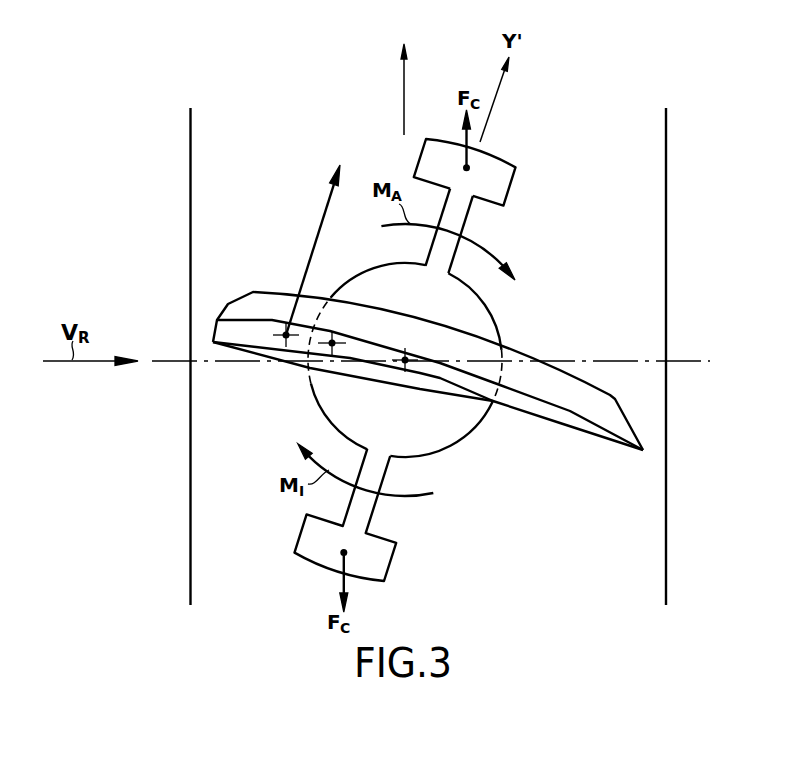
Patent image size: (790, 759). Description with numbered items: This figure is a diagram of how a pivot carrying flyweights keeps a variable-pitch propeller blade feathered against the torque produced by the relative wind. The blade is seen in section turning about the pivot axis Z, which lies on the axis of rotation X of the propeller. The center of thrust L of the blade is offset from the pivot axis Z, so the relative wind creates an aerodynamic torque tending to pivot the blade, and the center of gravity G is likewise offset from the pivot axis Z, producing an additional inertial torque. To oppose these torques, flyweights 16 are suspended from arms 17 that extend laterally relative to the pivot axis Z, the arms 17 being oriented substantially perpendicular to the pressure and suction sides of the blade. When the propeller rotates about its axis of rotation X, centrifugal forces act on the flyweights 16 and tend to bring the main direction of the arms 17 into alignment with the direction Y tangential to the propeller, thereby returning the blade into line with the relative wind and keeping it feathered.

The flyweights 16 is at (507, 182).
The arms 17 is at (458, 218).
The center of thrust L is at (282, 343).
The center of gravity G is at (323, 346).
The pivot axis Z is at (402, 364).
The axis of rotation X is at (157, 360).
The tangential direction Y is at (405, 77).